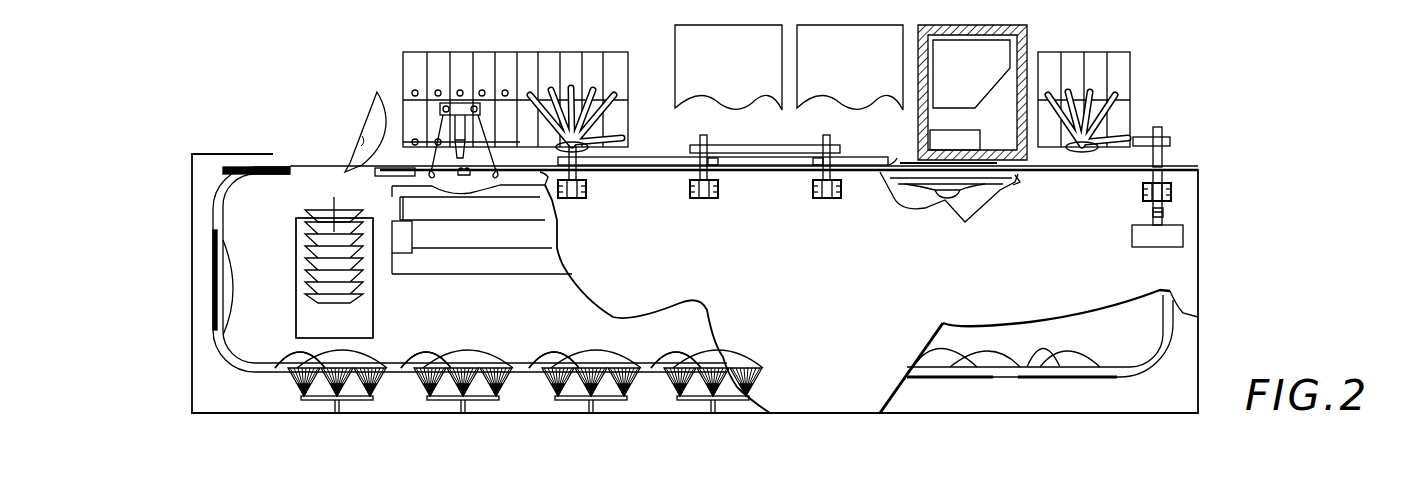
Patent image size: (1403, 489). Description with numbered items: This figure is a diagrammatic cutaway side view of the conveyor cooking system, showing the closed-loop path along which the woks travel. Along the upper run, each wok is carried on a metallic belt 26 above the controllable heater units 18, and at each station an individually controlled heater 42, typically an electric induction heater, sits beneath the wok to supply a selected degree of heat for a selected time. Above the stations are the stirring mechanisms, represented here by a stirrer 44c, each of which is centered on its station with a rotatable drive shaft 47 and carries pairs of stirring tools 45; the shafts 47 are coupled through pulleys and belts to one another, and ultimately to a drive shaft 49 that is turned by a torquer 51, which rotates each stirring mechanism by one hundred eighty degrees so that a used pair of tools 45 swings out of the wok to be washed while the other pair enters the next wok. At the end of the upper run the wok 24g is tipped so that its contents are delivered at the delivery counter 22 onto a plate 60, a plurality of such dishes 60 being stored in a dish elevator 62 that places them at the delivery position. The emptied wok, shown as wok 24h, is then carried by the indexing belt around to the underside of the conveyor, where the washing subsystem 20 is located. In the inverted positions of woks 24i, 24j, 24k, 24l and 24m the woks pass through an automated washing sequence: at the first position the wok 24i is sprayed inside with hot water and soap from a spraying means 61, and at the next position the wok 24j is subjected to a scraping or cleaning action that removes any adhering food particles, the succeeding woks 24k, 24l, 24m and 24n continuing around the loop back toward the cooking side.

The controllable heater units 18 is at (468, 192).
The washing subsystem 20 is at (413, 420).
The delivery counter 22 is at (333, 130).
The wok 24g is at (354, 158).
The wok 24h is at (213, 270).
The wok 24i is at (287, 353).
The wok 24j is at (415, 355).
The wok 24k is at (547, 355).
The wok 24l is at (665, 352).
The wok 24m is at (913, 348).
The wok 24n is at (1030, 352).
The metallic belt 26 is at (378, 168).
The heater 42 is at (950, 198).
The stirrer 44c is at (730, 99).
The stirring tools 45 is at (430, 177).
The rotatable drive shaft 47 is at (463, 153).
The drive shaft 49 is at (1165, 155).
The torquer 51 is at (1165, 238).
The plate 60 is at (318, 215).
The spraying means 61 is at (372, 363).
The dish elevator 62 is at (300, 323).